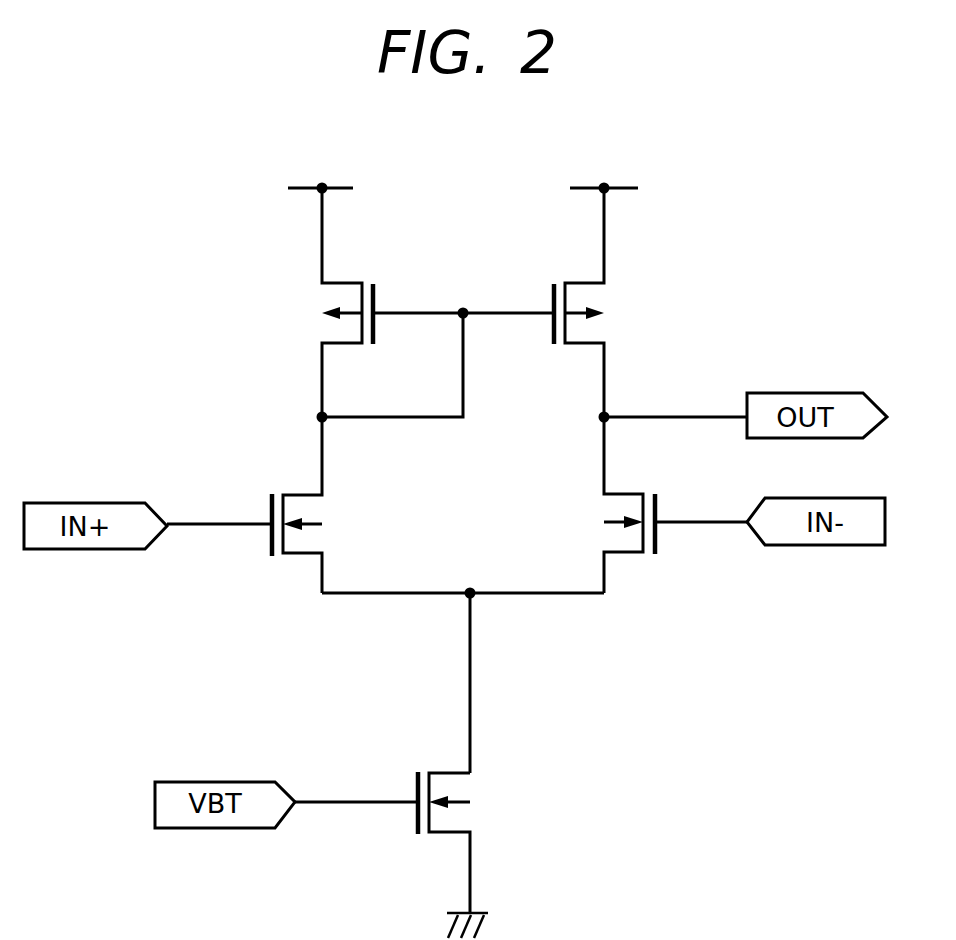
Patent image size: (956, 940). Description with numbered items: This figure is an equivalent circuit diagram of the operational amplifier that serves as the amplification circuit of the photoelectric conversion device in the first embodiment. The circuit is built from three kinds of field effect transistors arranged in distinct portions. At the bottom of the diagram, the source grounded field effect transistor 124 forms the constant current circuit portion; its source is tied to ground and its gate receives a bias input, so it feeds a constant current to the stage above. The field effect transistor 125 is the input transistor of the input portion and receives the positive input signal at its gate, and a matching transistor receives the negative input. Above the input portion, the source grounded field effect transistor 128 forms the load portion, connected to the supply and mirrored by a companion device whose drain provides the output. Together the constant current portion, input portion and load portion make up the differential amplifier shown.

The source grounded field effect transistor of a load portion 128 is at (323, 300).
The field effect transistor as an input transistor 125 is at (268, 549).
The source grounded field effect transistor of a constant current circuit portion 124 is at (410, 826).